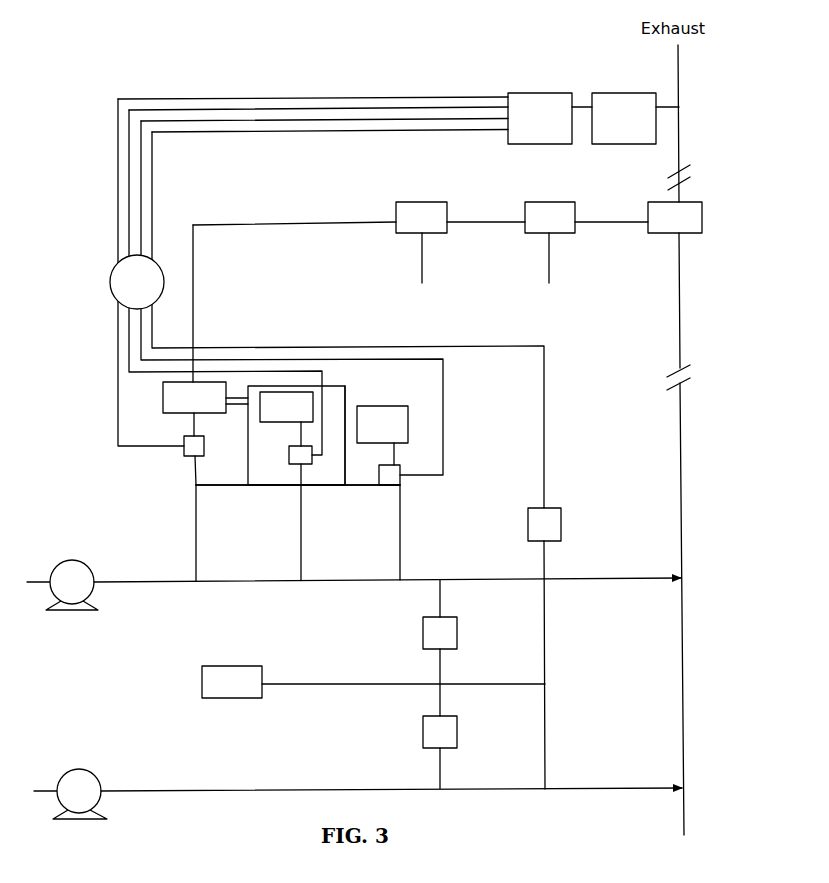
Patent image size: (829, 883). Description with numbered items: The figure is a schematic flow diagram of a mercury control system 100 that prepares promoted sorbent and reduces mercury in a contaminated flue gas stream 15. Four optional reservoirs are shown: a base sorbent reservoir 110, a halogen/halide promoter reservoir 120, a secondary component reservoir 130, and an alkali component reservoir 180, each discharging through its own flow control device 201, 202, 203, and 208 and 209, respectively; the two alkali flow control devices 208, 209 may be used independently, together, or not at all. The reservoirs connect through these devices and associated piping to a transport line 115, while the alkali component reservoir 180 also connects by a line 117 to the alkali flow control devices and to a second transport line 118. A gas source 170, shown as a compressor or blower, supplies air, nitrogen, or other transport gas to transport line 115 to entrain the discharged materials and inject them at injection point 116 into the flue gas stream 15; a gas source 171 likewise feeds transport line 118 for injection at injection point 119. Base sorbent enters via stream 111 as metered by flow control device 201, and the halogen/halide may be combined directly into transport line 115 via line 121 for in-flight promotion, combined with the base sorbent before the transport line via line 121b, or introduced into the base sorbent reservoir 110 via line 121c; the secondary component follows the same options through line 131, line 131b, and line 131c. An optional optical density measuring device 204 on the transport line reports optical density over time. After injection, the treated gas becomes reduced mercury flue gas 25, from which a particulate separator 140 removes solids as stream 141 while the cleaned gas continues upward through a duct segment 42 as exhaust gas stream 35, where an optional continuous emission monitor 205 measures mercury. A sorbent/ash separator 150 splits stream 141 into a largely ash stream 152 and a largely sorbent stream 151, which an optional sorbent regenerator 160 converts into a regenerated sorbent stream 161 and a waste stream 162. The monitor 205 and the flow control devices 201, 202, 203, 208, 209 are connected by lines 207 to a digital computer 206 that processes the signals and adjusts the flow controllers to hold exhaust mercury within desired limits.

The mercury control system 100 is at (548, 33).
The exhaust gas stream 35 is at (679, 113).
The exhaust conduit 42 is at (679, 183).
The reduced mercury flue gas 25 is at (680, 303).
The contaminated flue gas stream 15 is at (681, 661).
The digital computer 206 is at (540, 118).
The continuous emission monitor 205 is at (614, 118).
The lines 207 is at (110, 285).
The sorbent regenerator 160 is at (421, 217).
The sorbent/ash separator 150 is at (550, 217).
The particulate separator 140 is at (675, 217).
The regenerated sorbent stream 161 is at (288, 224).
The largely sorbent stream 151 is at (479, 222).
The separated solid materials stream 141 is at (604, 222).
The waste stream 162 is at (427, 264).
The largely ash stream 152 is at (553, 264).
The base sorbent reservoir 110 is at (205, 319).
The halogen/halide promoter reservoir 120 is at (286, 407).
The secondary component reservoir 130 is at (382, 424).
The flow control device 201 is at (206, 447).
The flow control device 202 is at (302, 475).
The flow control device 203 is at (407, 464).
The optical density measuring device 204 is at (563, 648).
The line 121c is at (250, 475).
The line 131c is at (345, 457).
The line 121b is at (221, 485).
The line 131b is at (323, 485).
The stream 111 is at (196, 530).
The line 121 is at (301, 530).
The line 131 is at (400, 530).
The gas source 170 is at (57, 567).
The gas source 171 is at (63, 775).
The transport line 115 is at (155, 582).
The injection point 116 is at (678, 581).
The supply line 117 is at (325, 684).
The transport line 118 is at (167, 791).
The injection point 119 is at (680, 791).
The alkali component reservoir 180 is at (232, 682).
The flow control device 208 is at (458, 648).
The flow control device 209 is at (459, 752).